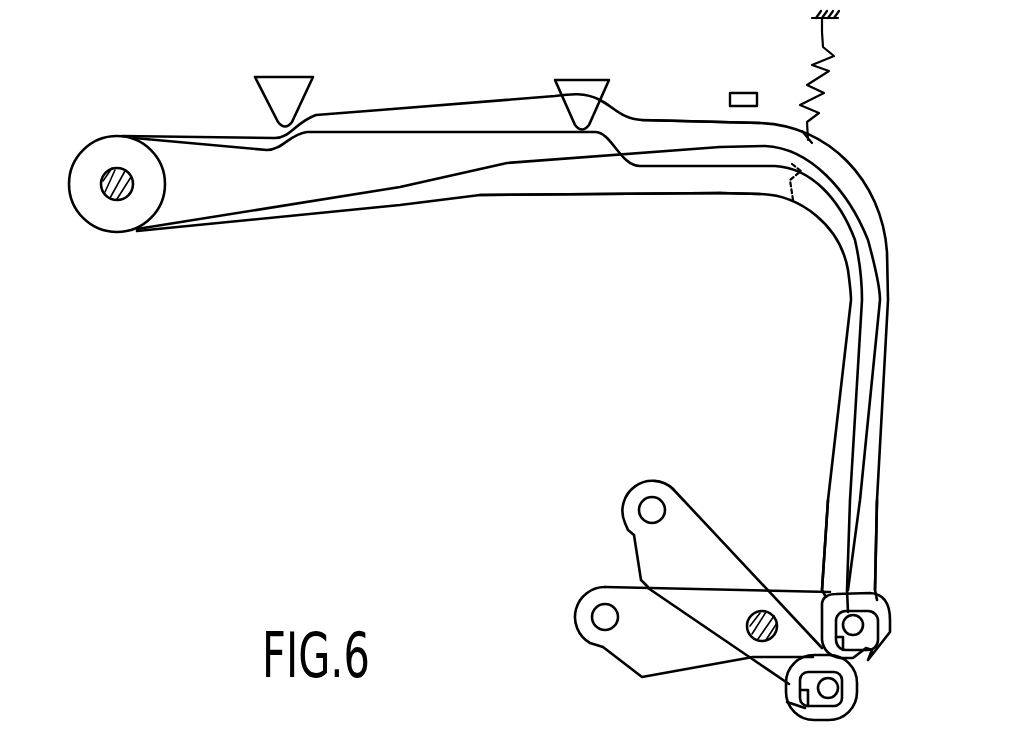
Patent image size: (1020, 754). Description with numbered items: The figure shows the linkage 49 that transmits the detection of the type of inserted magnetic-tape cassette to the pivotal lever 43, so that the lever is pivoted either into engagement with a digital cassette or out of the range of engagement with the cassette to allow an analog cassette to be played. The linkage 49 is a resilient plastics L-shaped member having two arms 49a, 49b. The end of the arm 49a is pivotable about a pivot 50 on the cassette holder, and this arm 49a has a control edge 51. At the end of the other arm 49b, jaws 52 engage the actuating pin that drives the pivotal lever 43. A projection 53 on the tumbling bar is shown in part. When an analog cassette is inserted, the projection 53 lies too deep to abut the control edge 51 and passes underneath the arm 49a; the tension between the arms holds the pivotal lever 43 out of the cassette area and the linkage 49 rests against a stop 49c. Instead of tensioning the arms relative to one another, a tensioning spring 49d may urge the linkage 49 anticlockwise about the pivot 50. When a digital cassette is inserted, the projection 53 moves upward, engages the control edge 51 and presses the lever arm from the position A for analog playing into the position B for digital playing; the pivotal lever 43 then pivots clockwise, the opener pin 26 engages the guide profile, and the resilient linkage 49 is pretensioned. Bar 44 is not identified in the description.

The opener pin 26 is at (651, 505).
The pivotal lever 43 is at (698, 540).
The bar with fixed pivot 44 is at (747, 642).
The linkage 49 is at (781, 100).
The arm 49a is at (595, 177).
The arm 49b is at (842, 487).
The stop 49c is at (740, 97).
The tensioning spring 49d is at (836, 62).
The pivot 50 is at (118, 168).
The control edge 51 is at (413, 135).
The jaws 52 is at (795, 690).
The projection 53 is at (280, 100).
The position for analog playing A is at (712, 127).
The position for digital playing B is at (714, 189).